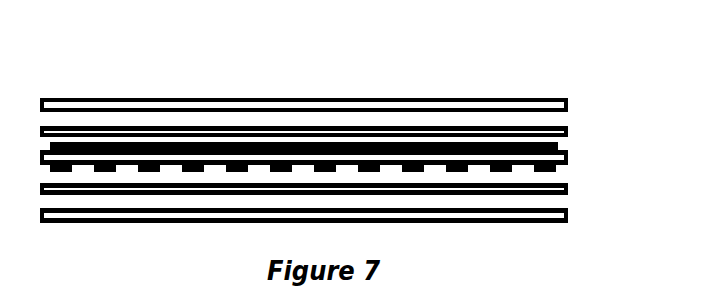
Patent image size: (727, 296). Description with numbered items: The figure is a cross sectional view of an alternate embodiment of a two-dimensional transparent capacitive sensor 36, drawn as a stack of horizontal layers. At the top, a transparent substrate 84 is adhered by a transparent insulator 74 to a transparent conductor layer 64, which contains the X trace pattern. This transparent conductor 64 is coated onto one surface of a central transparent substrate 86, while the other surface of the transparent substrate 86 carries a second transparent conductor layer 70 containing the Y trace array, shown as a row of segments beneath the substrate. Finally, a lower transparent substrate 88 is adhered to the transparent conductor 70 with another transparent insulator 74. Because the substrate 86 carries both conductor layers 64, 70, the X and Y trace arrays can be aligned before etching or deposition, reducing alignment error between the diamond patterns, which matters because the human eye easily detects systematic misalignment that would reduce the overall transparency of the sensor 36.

The two-dimensional transparent capacitive sensor 36 is at (321, 70).
The transparent substrate 84 is at (543, 100).
The transparent insulator 74 is at (567, 127).
The transparent conductor layer 64 is at (558, 147).
The transparent substrate 86 is at (568, 160).
The transparent conductor layer 70 is at (557, 170).
The transparent substrate 88 is at (547, 225).